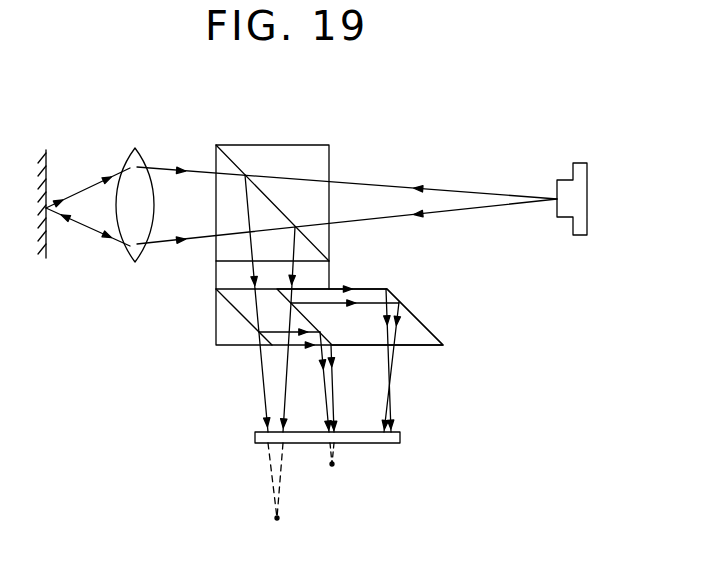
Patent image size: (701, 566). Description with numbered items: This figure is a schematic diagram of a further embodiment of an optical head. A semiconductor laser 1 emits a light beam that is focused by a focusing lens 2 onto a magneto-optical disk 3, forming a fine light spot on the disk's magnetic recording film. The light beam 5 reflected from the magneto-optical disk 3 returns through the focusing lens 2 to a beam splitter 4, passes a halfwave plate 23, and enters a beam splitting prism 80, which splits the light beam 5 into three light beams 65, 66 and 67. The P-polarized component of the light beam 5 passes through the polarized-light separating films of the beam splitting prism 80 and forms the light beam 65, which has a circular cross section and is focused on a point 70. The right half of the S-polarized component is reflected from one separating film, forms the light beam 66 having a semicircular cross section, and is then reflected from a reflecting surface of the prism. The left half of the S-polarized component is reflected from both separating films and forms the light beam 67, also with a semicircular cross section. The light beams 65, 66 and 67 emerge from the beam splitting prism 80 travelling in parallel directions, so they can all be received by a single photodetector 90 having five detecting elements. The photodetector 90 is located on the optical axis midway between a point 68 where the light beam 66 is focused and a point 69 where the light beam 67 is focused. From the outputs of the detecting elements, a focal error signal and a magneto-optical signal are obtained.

The semiconductor laser 1 is at (587, 175).
The focusing lens 2 is at (140, 162).
The magneto-optical disk 3 is at (46, 166).
The beam splitter 4 is at (300, 146).
The light beam 5 is at (297, 267).
The halfwave plate 23 is at (216, 278).
The beam splitting prism 80 is at (216, 327).
The light beam 66 is at (374, 289).
The light beam 65 is at (262, 373).
The light beam 67 is at (333, 390).
The point 68 is at (392, 381).
The photodetector 90 is at (256, 435).
The point 69 is at (332, 464).
The point 70 is at (277, 518).